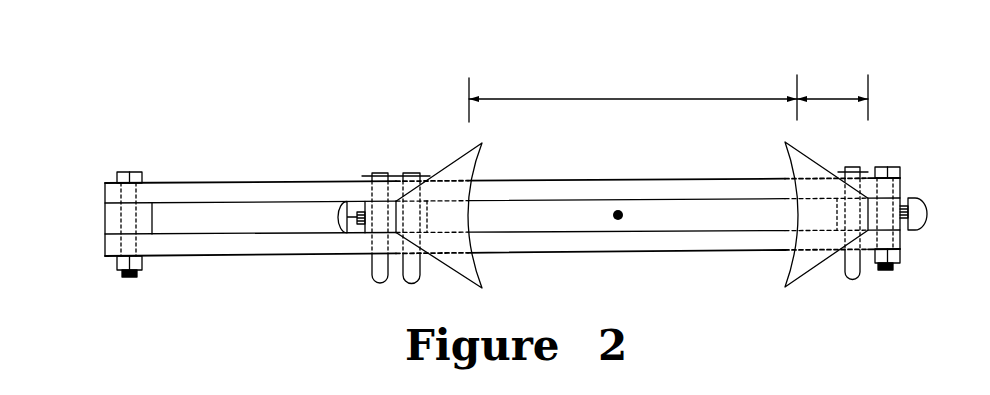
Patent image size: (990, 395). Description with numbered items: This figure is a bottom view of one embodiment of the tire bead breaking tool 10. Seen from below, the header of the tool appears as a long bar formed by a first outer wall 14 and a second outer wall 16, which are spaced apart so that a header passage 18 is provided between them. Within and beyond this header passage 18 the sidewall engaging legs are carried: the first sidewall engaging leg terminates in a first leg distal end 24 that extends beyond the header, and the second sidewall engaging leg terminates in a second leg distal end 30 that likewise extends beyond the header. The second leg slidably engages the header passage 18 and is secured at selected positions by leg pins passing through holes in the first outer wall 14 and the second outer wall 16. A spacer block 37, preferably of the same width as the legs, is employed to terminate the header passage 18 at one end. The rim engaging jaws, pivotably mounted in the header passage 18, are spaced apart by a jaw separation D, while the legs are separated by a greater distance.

The tire bead breaking tool 10 is at (685, 75).
The first outer wall 14 is at (278, 193).
The second outer wall 16 is at (633, 242).
The header passage 18 is at (614, 208).
The first leg distal end 24 is at (897, 202).
The second leg distal end 30 is at (377, 228).
The spacer block 37 is at (110, 218).